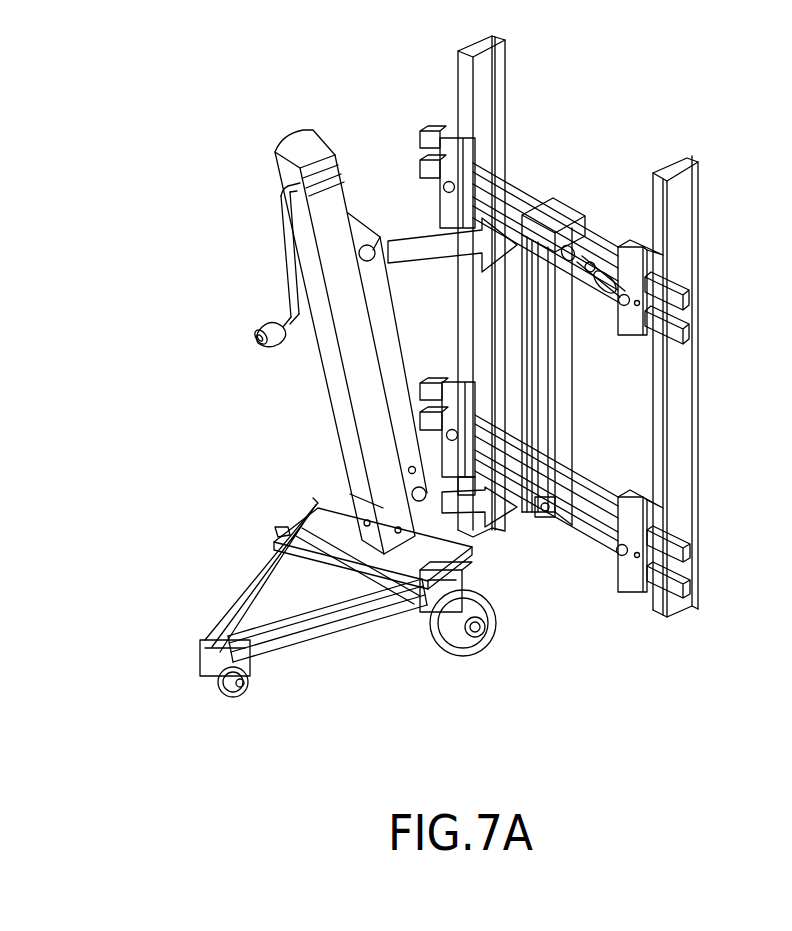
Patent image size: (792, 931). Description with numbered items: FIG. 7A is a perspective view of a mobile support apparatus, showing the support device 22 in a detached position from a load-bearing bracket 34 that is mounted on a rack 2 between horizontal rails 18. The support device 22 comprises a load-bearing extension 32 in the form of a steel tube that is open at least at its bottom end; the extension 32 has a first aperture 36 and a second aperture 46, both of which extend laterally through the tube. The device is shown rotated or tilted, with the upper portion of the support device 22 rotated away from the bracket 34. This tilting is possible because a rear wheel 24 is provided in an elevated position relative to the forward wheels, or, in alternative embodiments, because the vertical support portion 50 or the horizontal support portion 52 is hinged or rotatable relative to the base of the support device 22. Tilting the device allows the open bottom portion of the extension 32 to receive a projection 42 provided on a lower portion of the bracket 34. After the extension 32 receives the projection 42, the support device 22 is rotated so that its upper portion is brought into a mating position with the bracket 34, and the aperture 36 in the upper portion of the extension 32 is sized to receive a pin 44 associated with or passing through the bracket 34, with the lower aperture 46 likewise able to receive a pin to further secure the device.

The rack 2 is at (655, 270).
The horizontal rail 18 is at (516, 182).
The support device 22 is at (196, 403).
The rear wheel 24 is at (224, 697).
The load-bearing extension 32 is at (397, 403).
The load-bearing bracket 34 is at (568, 412).
The first aperture 36 is at (358, 222).
The projection 42 is at (546, 514).
The pin 44 is at (600, 250).
The second aperture 46 is at (411, 492).
The vertical support portion 50 is at (292, 143).
The horizontal support portion 52 is at (308, 638).